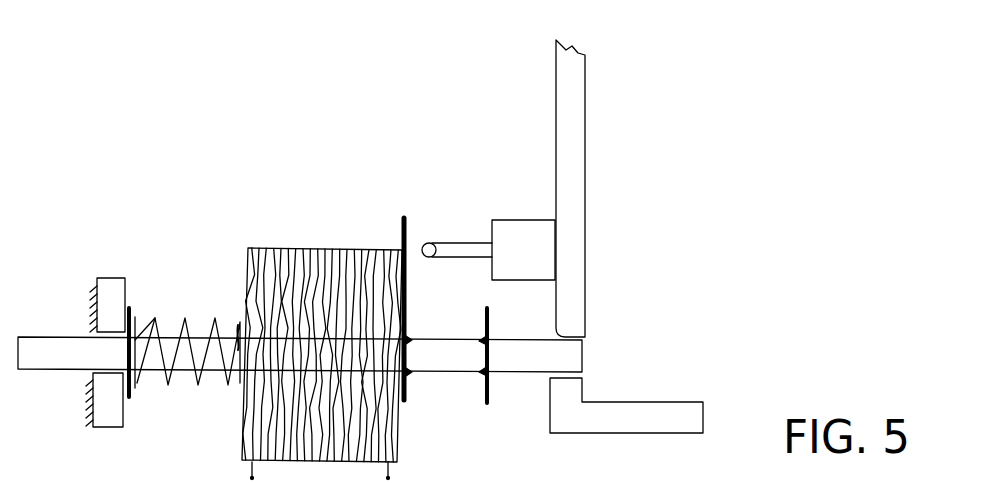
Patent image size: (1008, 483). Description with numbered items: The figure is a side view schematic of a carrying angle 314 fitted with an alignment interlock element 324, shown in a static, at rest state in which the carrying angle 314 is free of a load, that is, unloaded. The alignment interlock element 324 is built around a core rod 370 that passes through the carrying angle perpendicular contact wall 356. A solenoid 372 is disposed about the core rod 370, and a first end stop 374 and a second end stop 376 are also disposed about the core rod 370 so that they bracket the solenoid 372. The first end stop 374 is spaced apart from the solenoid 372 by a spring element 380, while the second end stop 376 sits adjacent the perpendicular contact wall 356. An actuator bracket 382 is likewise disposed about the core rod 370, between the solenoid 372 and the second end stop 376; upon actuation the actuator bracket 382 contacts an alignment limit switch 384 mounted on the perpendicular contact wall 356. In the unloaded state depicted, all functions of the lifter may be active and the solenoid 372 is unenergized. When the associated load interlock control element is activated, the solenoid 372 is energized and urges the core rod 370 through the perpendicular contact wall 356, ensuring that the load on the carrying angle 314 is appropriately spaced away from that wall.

The carrying angle 314 is at (638, 402).
The alignment interlock element 324 is at (377, 81).
The carrying angle perpendicular contact wall 356 is at (567, 308).
The core rod 370 is at (510, 376).
The solenoid 372 is at (283, 248).
The first end stop 374 is at (129, 313).
The second end stop 376 is at (489, 322).
The spring element 380 is at (167, 385).
The actuator bracket 382 is at (403, 228).
The alignment limit switch 384 is at (522, 217).